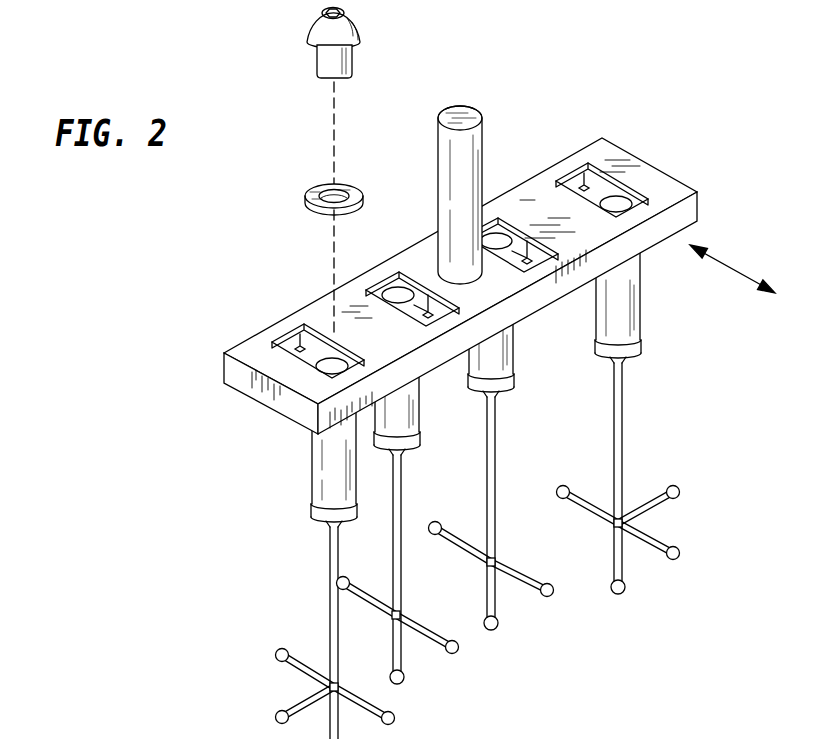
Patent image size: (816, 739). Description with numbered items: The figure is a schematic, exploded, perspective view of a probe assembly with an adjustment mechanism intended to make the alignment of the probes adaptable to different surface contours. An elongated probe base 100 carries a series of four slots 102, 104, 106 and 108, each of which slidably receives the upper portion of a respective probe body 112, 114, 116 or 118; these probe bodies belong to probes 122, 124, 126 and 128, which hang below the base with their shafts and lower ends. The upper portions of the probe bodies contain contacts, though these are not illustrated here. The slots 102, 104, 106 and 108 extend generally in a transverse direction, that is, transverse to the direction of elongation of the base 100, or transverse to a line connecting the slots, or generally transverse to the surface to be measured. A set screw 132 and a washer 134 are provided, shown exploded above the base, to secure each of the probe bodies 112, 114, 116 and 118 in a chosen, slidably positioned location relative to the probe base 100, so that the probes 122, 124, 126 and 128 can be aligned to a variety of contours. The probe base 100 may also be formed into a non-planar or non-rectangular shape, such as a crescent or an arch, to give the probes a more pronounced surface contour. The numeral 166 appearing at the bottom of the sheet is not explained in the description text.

The probe base 100 is at (689, 161).
The slot 102 is at (297, 322).
The slot 104 is at (393, 262).
The slot 106 is at (501, 208).
The slot 108 is at (577, 168).
The probe body 112 is at (313, 473).
The probe body 114 is at (401, 409).
The probe body 116 is at (505, 353).
The probe body 118 is at (632, 328).
The probe 122 is at (309, 583).
The probe 124 is at (377, 515).
The probe 126 is at (465, 488).
The probe 128 is at (591, 430).
The set screw 132 is at (328, 30).
The washer 134 is at (312, 190).
The paddle 166 is at (481, 726).